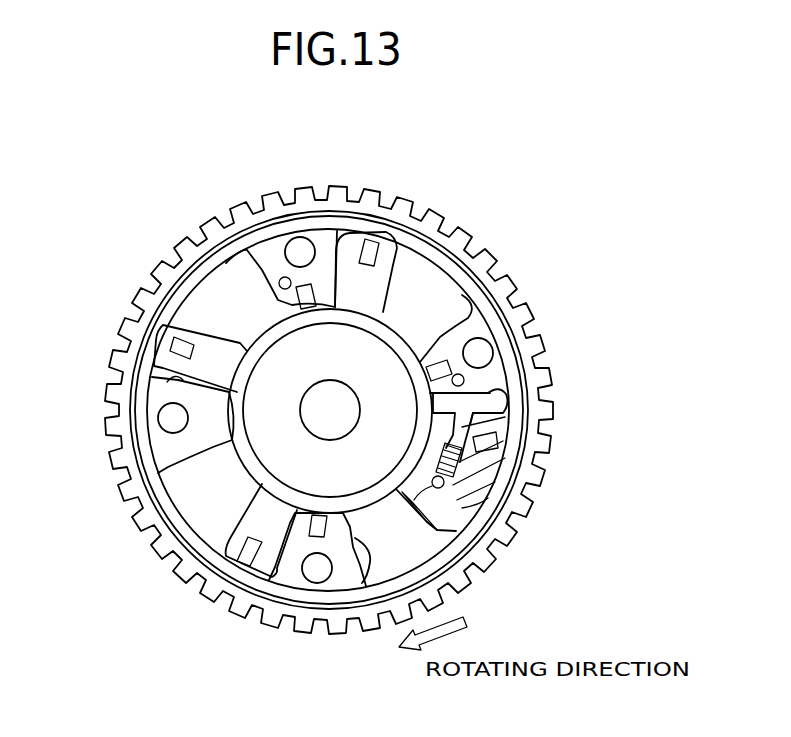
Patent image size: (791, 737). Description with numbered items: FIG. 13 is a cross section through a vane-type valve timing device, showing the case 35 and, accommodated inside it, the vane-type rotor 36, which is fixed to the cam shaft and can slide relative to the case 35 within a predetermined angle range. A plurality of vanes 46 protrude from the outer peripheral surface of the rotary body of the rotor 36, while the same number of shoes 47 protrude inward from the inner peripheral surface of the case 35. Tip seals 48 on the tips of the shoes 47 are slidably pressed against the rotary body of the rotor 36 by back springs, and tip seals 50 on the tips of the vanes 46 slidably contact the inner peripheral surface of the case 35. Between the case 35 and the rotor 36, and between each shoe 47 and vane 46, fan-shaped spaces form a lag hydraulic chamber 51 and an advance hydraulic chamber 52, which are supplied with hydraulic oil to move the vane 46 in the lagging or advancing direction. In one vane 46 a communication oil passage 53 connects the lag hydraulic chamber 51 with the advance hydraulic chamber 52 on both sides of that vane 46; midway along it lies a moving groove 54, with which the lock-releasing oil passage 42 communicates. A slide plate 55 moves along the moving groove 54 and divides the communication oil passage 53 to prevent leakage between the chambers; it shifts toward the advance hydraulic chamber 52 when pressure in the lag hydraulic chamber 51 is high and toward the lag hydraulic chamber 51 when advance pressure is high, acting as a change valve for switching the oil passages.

The case 35 is at (190, 562).
The vane-type rotor 36 is at (254, 316).
The lock-releasing oil passage 42 is at (480, 530).
The vanes 46 is at (378, 282).
The shoes 47 is at (497, 373).
The tip seals 48 is at (443, 360).
The tip seals 50 is at (372, 240).
The lag hydraulic chamber 51 is at (428, 293).
The advance hydraulic chamber 52 is at (165, 378).
The communication oil passage 53 is at (500, 448).
The moving groove 54 is at (455, 510).
The slide plate 55 is at (498, 500).